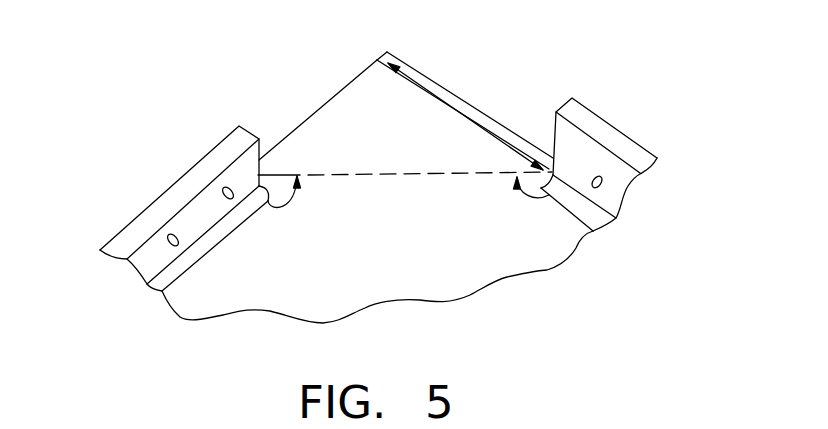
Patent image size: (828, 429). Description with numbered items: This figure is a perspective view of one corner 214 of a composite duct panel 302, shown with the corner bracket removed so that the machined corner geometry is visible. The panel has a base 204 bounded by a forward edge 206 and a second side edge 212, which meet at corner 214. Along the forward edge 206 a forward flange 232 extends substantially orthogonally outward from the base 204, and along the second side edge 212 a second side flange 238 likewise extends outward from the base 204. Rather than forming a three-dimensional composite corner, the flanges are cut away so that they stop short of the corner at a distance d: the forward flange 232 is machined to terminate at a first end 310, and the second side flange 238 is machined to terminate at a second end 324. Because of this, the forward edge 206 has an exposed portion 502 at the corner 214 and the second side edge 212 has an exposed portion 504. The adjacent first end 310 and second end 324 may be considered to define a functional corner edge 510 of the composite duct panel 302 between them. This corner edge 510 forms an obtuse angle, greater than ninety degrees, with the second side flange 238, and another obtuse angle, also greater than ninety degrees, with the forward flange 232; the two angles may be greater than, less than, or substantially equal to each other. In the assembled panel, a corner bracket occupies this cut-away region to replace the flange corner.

The base 204 is at (377, 290).
The second side edge 212 is at (347, 86).
The corner 214 is at (389, 85).
The forward edge 206 is at (433, 81).
The distance d is at (463, 101).
The exposed portion 502 is at (488, 132).
The exposed portion 504 is at (318, 133).
The corner edge 510 is at (413, 177).
The second side flange 238 is at (130, 238).
The second end 324 is at (249, 133).
The forward flange 232 is at (610, 138).
The first end 310 is at (563, 105).
The composite duct panel 302 is at (437, 265).